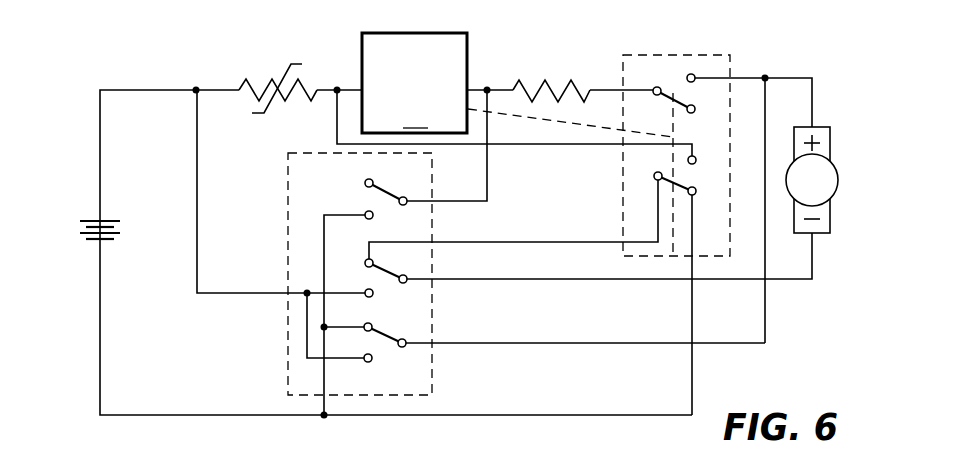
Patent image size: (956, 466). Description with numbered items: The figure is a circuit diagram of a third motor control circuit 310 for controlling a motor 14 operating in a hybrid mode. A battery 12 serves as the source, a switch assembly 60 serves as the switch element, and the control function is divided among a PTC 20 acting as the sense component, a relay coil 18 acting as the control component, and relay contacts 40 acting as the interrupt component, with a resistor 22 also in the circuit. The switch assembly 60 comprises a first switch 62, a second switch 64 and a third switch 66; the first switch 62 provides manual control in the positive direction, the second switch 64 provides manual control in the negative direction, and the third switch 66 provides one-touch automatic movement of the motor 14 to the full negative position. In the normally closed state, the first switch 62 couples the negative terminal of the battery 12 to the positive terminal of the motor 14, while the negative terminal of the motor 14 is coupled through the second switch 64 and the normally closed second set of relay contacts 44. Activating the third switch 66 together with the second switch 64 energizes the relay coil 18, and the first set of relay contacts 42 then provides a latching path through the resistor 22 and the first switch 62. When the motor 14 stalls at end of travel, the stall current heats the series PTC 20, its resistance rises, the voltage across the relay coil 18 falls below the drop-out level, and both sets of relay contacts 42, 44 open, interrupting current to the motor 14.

The third motor control circuit 310 is at (130, 60).
The battery 12 is at (92, 218).
The motor 14 is at (801, 192).
The relay coil 18 is at (414, 83).
The PTC 20 is at (267, 86).
The resistor 22 is at (546, 86).
The relay contacts 40 is at (623, 55).
The first set of relay contacts 42 is at (680, 104).
The second set of relay contacts 44 is at (682, 186).
The switch assembly 60 is at (325, 182).
The first switch 62 is at (384, 342).
The second switch 64 is at (386, 280).
The third switch 66 is at (384, 194).